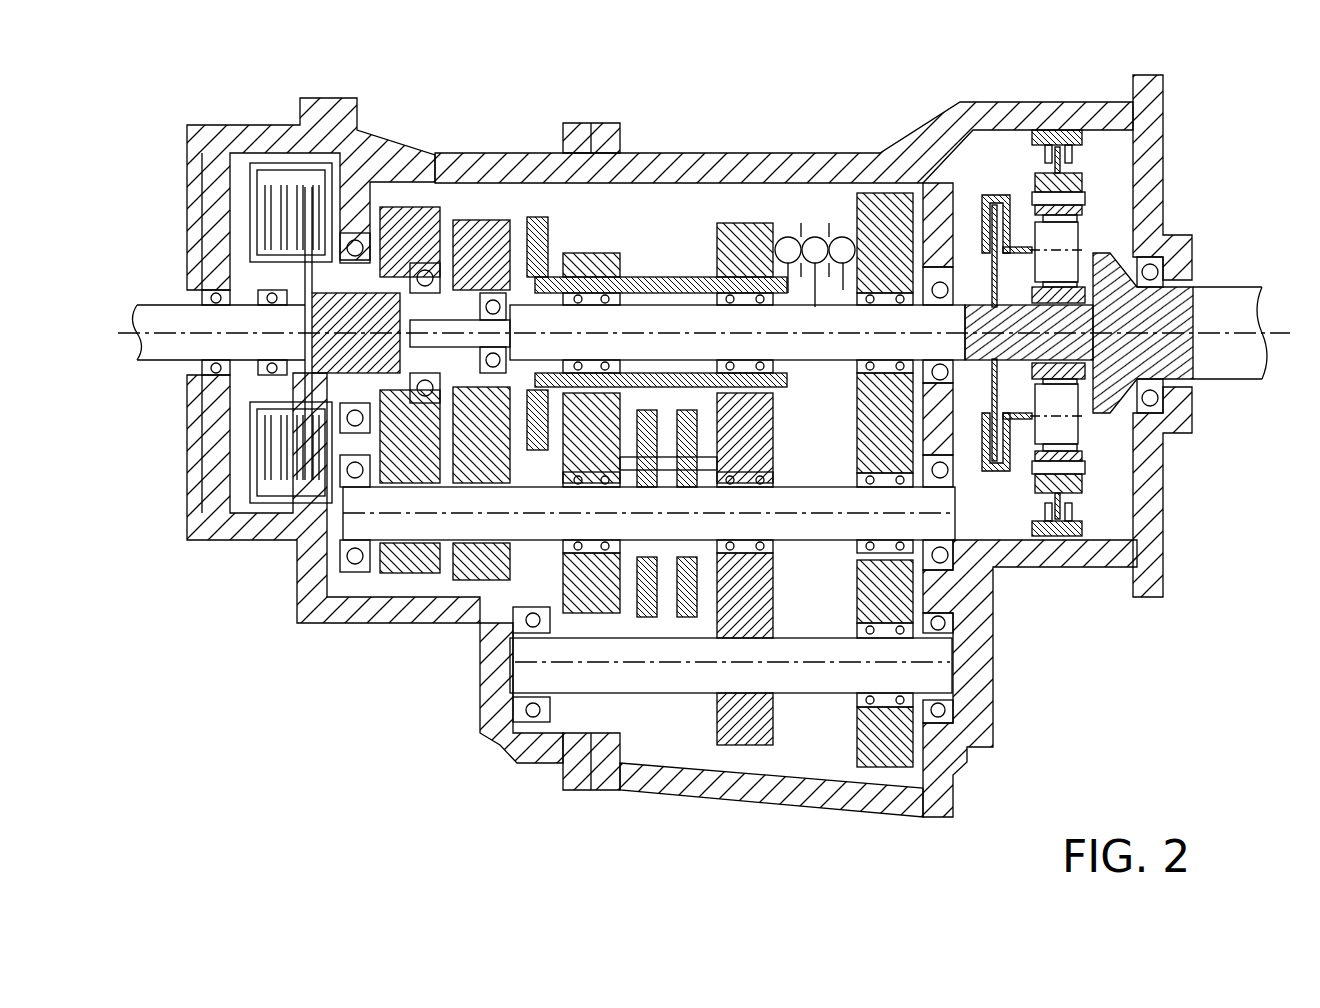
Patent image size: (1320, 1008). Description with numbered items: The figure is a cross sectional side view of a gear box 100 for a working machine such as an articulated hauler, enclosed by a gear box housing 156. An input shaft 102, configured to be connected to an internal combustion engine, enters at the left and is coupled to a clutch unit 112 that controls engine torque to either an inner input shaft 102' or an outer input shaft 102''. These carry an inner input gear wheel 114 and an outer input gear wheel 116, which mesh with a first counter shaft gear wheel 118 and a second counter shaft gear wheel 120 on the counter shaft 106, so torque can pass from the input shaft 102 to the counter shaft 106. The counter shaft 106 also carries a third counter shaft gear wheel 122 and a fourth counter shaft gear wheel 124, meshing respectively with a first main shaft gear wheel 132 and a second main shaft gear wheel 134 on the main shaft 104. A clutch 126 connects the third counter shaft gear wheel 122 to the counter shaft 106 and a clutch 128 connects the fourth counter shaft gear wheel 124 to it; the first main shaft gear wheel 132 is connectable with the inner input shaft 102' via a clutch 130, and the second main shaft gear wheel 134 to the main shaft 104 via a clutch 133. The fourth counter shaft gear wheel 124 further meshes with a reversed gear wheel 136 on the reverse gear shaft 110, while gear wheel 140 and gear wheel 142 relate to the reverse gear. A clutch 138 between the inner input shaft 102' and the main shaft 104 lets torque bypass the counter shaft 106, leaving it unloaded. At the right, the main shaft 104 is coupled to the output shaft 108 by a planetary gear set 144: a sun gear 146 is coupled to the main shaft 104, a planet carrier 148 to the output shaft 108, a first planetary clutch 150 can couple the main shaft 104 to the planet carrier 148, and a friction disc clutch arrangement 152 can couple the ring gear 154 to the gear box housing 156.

The gear box 100 is at (1200, 708).
The input shaft 102 is at (199, 306).
The inner input shaft 102' is at (464, 230).
The outer input shaft 102'' is at (377, 269).
The main shaft 104 is at (673, 323).
The counter shaft 106 is at (360, 527).
The output shaft 108 is at (1227, 310).
The reverse gear shaft 110 is at (927, 680).
The clutch unit 112 is at (277, 167).
The inner input gear wheel 114 is at (517, 243).
The outer input gear wheel 116 is at (385, 207).
The first counter shaft gear wheel 118 is at (410, 550).
The second counter shaft gear wheel 120 is at (480, 563).
The third counter shaft gear wheel 122 is at (545, 725).
The fourth counter shaft gear wheel 124 is at (660, 615).
The clutch 126 is at (608, 760).
The clutch 128 is at (593, 580).
The clutch 130 is at (480, 622).
The first main shaft gear wheel 132 is at (600, 257).
The clutch 133 is at (817, 430).
The second main shaft gear wheel 134 is at (763, 233).
The reversed gear wheel 136 is at (747, 470).
The clutch 138 is at (540, 220).
The gear wheel 140 is at (893, 203).
The gear wheel 142 is at (887, 750).
The planetary gear set 144 is at (1138, 312).
The sun gear 146 is at (1167, 463).
The planet carrier 148 is at (1077, 258).
The first planetary clutch 150 is at (1003, 190).
The friction disc clutch arrangement 152 is at (1073, 157).
The ring gear 154 is at (1087, 178).
The gear box housing 156 is at (1037, 117).